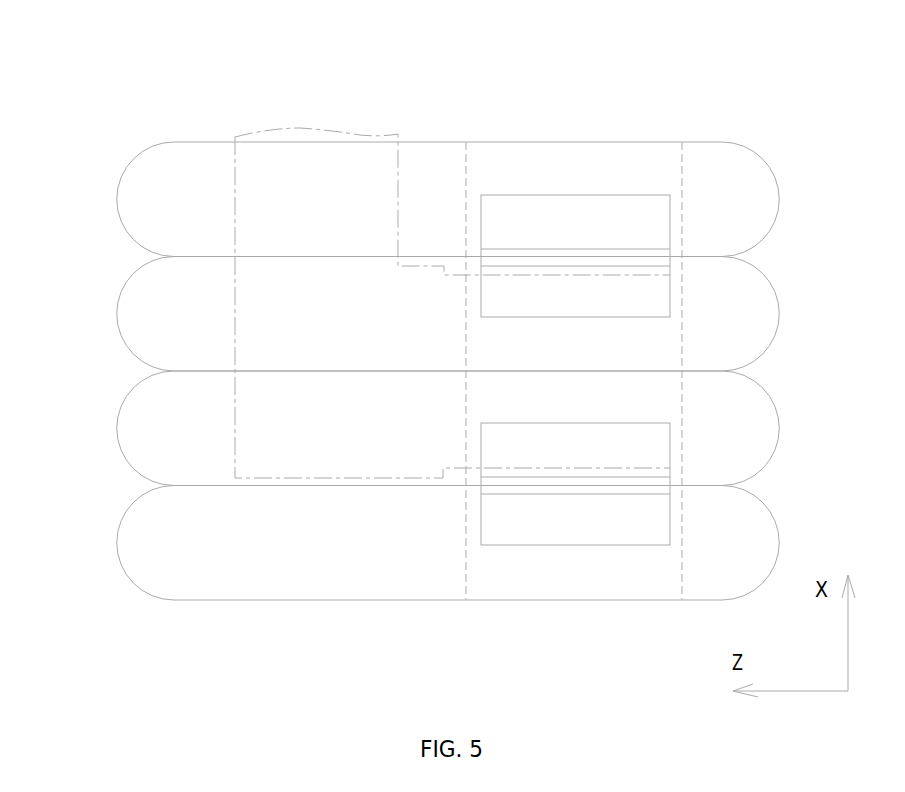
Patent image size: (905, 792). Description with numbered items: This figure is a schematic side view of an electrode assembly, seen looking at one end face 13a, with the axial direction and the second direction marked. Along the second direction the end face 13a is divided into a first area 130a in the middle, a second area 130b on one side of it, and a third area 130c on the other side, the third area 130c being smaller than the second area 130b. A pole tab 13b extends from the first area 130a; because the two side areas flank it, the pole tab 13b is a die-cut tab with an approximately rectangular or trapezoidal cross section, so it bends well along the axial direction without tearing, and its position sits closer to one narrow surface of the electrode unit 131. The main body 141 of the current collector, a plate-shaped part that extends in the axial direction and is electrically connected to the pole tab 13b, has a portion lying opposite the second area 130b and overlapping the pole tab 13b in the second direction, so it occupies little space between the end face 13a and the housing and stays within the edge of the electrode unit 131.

The end face 13a is at (757, 73).
The pole tab 13b is at (621, 258).
The first area 130a is at (682, 128).
The second area 130b is at (465, 128).
The third area 130c is at (783, 128).
The electrode unit 131 is at (158, 553).
The main body 141 is at (290, 419).